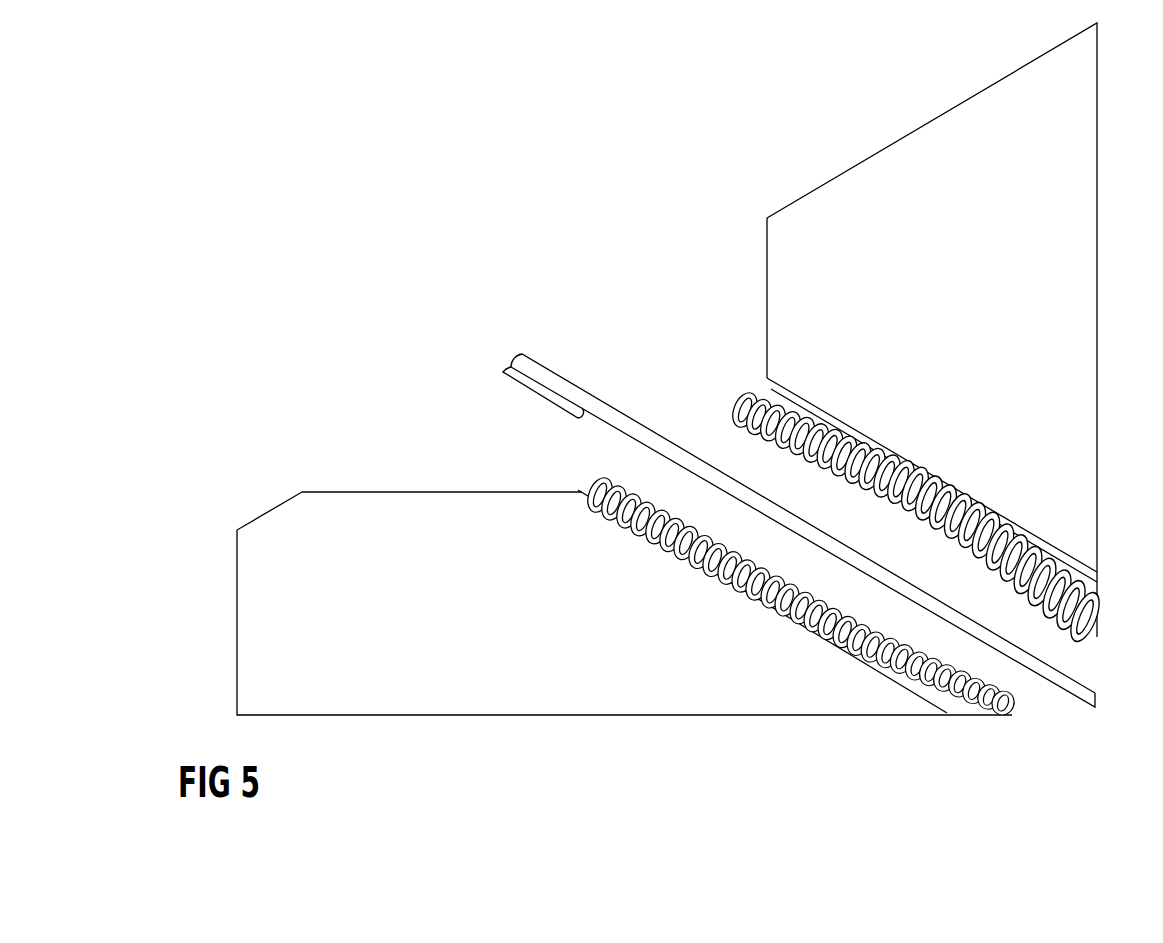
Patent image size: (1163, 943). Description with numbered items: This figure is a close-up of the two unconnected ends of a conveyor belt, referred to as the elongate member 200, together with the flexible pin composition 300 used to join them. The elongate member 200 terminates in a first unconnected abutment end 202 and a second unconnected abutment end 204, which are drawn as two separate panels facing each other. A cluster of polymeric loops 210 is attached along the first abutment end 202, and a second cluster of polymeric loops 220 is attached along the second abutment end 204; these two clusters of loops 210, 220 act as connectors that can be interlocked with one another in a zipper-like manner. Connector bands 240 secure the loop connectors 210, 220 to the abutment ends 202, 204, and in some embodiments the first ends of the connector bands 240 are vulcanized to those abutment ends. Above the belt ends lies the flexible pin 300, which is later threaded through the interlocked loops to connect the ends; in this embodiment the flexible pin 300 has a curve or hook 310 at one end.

The elongate member 200 is at (832, 226).
The first unconnected abutment end 202 is at (580, 490).
The second unconnected abutment end 204 is at (765, 377).
The clusters of polymeric loops 210 is at (758, 597).
The clusters of polymeric loops 220 is at (931, 483).
The connector bands 240 is at (907, 490).
The flexible pin 300 is at (614, 410).
The curve or hook 310 is at (505, 357).